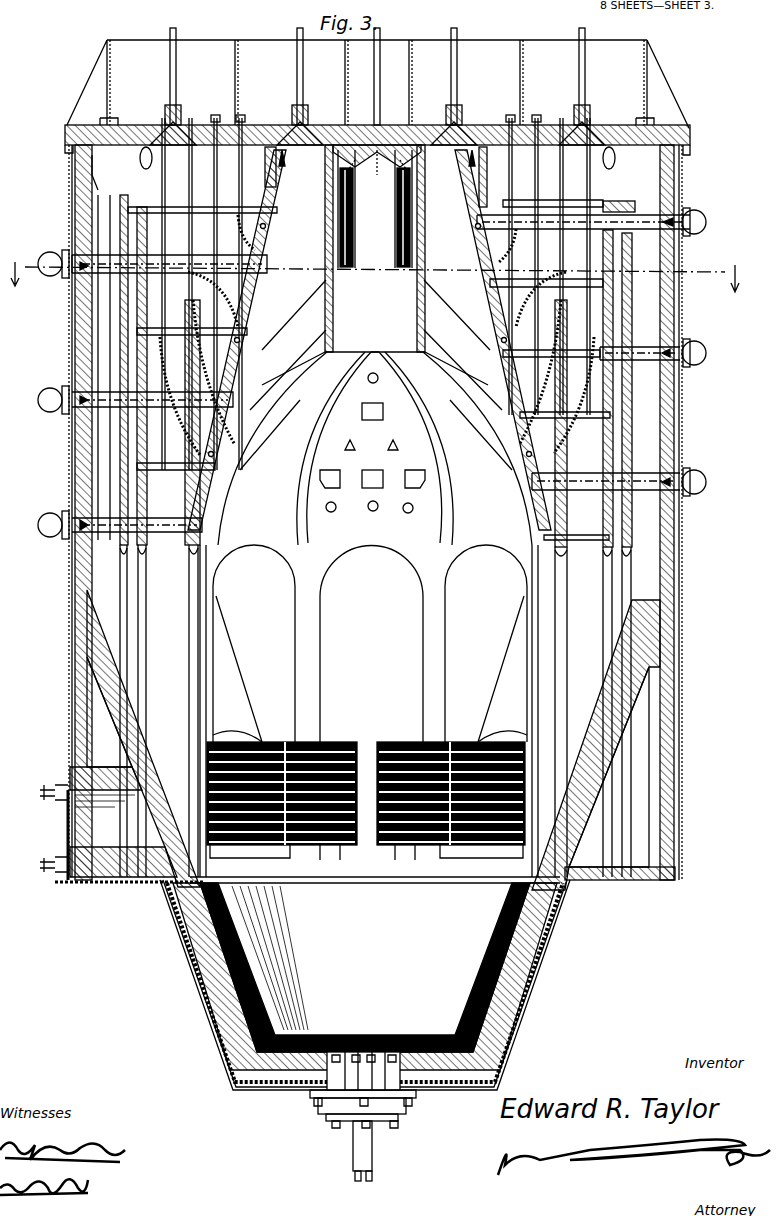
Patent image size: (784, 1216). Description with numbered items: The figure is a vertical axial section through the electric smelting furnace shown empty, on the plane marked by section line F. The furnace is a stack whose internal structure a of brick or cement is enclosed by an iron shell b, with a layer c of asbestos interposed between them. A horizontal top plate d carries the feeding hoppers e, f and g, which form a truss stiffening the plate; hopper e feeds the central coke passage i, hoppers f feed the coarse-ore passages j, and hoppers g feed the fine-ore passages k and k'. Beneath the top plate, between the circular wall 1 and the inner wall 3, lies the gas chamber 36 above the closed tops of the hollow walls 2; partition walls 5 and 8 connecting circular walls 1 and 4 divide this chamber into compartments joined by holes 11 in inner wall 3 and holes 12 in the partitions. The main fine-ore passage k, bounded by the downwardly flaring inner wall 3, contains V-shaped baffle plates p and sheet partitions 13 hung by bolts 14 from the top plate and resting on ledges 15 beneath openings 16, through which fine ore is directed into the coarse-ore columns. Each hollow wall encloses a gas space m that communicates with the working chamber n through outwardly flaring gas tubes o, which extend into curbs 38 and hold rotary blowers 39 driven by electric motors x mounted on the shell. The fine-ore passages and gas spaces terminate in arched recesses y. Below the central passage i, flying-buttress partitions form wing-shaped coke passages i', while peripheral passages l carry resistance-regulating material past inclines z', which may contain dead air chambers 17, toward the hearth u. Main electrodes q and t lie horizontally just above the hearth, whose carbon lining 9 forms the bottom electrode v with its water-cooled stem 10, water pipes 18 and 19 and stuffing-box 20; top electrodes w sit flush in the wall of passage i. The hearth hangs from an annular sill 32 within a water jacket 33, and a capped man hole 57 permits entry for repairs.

The circular wall 1 is at (92, 230).
The hollow walls 2 is at (118, 315).
The inner wall 3 is at (282, 205).
The circular wall 4 is at (325, 325).
The partition wall 5 is at (398, 400).
The partition wall 8 is at (255, 145).
The carbon body 9 is at (262, 1000).
The water-cooled metallic stem 10 is at (353, 1140).
The holes 11 is at (276, 168).
The holes 12 is at (146, 147).
The partitions 13 is at (546, 395).
The bolts 14 is at (216, 118).
The ledges 15 is at (572, 460).
The openings 16 is at (270, 270).
The dead air chambers 17 is at (372, 768).
The water circulating pipe 18 is at (355, 1178).
The water circulating pipe 19 is at (372, 1178).
The water-cooled stuffing-box 20 is at (318, 1112).
The annular metallic sill 32 is at (570, 885).
The water jacket 33 is at (205, 960).
The gas chamber 36 is at (135, 172).
The curbs 38 is at (72, 240).
The rotary blowers 39 is at (78, 406).
The man hole 57 is at (122, 833).
The internal structure a is at (72, 182).
The metallic shell b is at (77, 211).
The layer of incombustible non-conductor c is at (72, 312).
The top plate d is at (65, 133).
The feeding hopper e is at (377, 101).
The feeding hopper f is at (363, 82).
The feeding hopper g is at (378, 84).
The coke passage i is at (375, 248).
The wing-shaped passage i' is at (367, 443).
The coarse-ore passage j is at (367, 303).
The main fine-ore passage k is at (376, 359).
The peripheral fine-ore passage k' is at (375, 335).
The peripheral passage l is at (369, 711).
The gas space m is at (130, 435).
The working chamber n is at (306, 553).
The gas tubes o is at (170, 275).
The baffle plates p is at (178, 214).
The main electrode q is at (393, 742).
The main electrode t is at (338, 742).
The hearth u is at (345, 944).
The bottom secondary electrode v is at (380, 1035).
The top secondary electrode w is at (338, 236).
The electric motor x is at (38, 268).
The arched recess y is at (182, 612).
The incline z' is at (340, 740).
The section line E— F is at (377, 277).